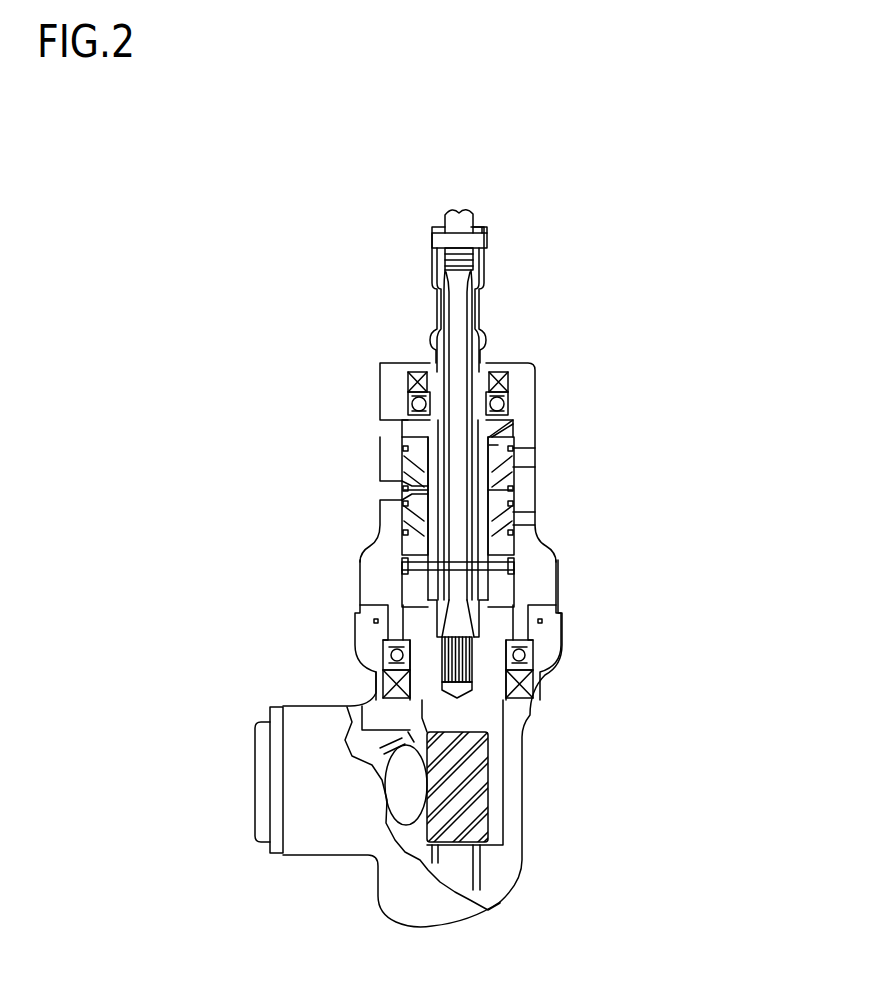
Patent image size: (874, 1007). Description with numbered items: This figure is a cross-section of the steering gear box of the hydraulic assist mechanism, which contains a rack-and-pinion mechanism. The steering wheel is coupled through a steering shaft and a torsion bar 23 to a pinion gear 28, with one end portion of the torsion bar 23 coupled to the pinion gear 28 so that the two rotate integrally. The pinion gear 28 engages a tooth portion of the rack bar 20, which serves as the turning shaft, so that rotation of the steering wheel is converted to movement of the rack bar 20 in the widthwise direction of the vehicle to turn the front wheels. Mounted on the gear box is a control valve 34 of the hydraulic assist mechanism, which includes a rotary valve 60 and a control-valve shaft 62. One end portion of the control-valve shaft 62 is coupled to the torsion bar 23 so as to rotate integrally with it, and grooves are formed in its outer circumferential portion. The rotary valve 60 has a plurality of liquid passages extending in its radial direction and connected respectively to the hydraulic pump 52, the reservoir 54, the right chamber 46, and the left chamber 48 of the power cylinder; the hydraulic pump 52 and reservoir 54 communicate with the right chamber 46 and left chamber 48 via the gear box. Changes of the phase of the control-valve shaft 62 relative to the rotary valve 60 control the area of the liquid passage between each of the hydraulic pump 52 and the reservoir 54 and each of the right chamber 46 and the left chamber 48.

The control-valve shaft 62 is at (437, 259).
The torsion bar 23 is at (457, 317).
The control valve 34 is at (523, 381).
The rotary valve 60 is at (503, 443).
The reservoir 54 is at (357, 427).
The hydraulic pump 52 is at (355, 495).
The right chamber 46 is at (552, 463).
The left chamber 48 is at (549, 519).
The pinion gear 28 is at (473, 783).
The rack bar 20 is at (395, 790).